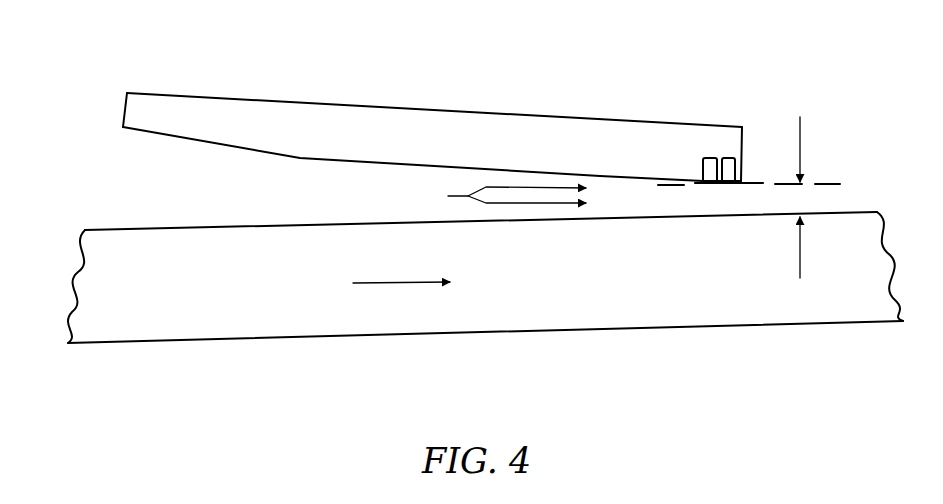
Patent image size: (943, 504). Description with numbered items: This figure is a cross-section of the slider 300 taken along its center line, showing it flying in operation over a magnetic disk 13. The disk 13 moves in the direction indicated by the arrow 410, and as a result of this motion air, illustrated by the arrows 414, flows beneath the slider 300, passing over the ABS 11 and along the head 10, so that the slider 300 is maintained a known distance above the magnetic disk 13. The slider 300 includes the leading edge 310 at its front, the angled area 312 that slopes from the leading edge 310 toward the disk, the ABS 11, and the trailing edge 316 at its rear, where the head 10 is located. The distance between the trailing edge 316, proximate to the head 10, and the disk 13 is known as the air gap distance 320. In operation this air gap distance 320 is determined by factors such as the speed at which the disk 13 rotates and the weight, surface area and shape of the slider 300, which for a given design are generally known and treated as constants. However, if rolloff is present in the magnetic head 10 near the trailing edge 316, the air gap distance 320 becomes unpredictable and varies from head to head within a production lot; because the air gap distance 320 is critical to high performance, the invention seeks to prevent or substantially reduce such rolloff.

The slider 300 is at (246, 110).
The leading edge 310 is at (125, 115).
The angled area 312 is at (186, 138).
The trailing edge 316 is at (743, 156).
The head 10 is at (718, 188).
The ABS 11 is at (645, 185).
The air gap distance 320 is at (801, 133).
The arrows illustrating air flow 414 is at (498, 194).
The magnetic disk 13 is at (174, 308).
The arrow indicating disk motion 410 is at (380, 282).